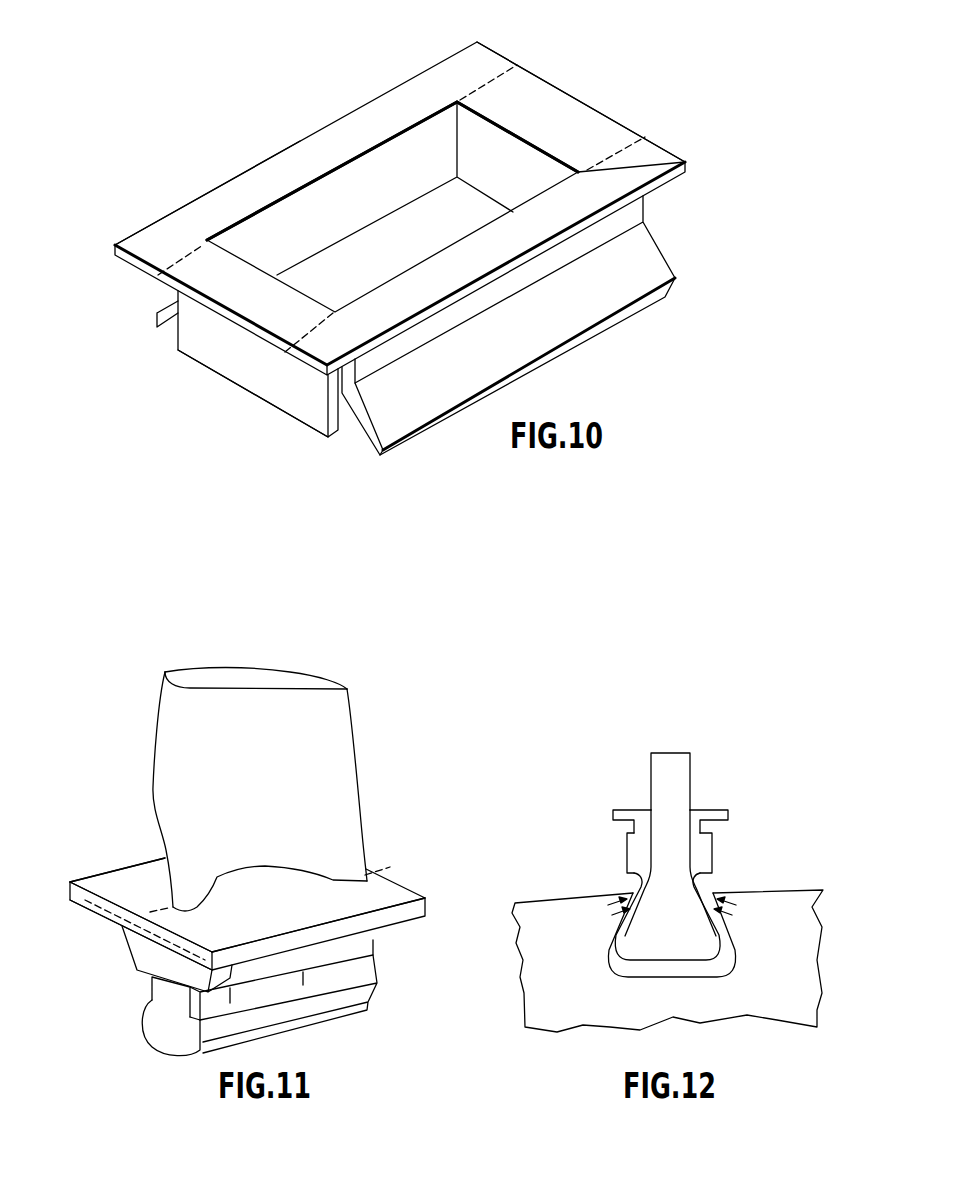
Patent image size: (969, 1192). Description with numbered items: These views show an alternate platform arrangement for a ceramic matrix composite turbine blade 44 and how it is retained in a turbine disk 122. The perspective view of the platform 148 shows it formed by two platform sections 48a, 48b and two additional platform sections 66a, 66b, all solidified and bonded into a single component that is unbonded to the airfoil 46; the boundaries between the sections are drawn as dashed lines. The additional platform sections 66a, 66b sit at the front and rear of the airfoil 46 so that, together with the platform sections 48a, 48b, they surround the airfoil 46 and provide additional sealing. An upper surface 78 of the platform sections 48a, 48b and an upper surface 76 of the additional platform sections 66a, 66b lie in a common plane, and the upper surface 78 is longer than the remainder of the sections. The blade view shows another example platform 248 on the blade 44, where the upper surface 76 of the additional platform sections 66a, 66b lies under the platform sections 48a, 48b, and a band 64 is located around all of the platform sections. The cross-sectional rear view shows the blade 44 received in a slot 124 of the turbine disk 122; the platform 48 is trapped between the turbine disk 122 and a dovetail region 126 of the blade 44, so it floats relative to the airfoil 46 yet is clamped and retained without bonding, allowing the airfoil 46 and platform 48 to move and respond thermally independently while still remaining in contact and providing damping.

In FIG. 10, the alternate platform 148 is at (664, 78).
In FIG. 10, the platform section 48a is at (362, 122).
In FIG. 11, the platform section 48a is at (127, 888).
In FIG. 10, the platform section 48b is at (653, 161).
In FIG. 11, the platform section 48b is at (380, 894).
In FIG. 10, the upper surface of the platform sections 78 is at (252, 182).
In FIG. 11, the upper surface of the platform sections 78 is at (146, 878).
In FIG. 10, the upper surface of the additional platform sections 76 is at (515, 101).
In FIG. 10, the additional platform section 66a is at (239, 292).
In FIG. 11, the additional platform section 66a is at (98, 908).
In FIG. 10, the additional platform section 66b is at (558, 133).
In FIG. 11, the blade 44 is at (384, 690).
In FIG. 12, the blade 44 is at (736, 746).
In FIG. 11, the airfoil 46 is at (333, 755).
In FIG. 12, the airfoil 46 is at (676, 798).
In FIG. 11, the platform 248 is at (326, 899).
In FIG. 11, the platform 48 is at (294, 1001).
In FIG. 12, the platform 48 is at (623, 813).
In FIG. 11, the band 64 is at (176, 1000).
In FIG. 12, the band 64 is at (705, 857).
In FIG. 12, the dovetail region 126 is at (647, 940).
In FIG. 12, the slot 124 is at (727, 954).
In FIG. 12, the turbine disk 122 is at (782, 965).